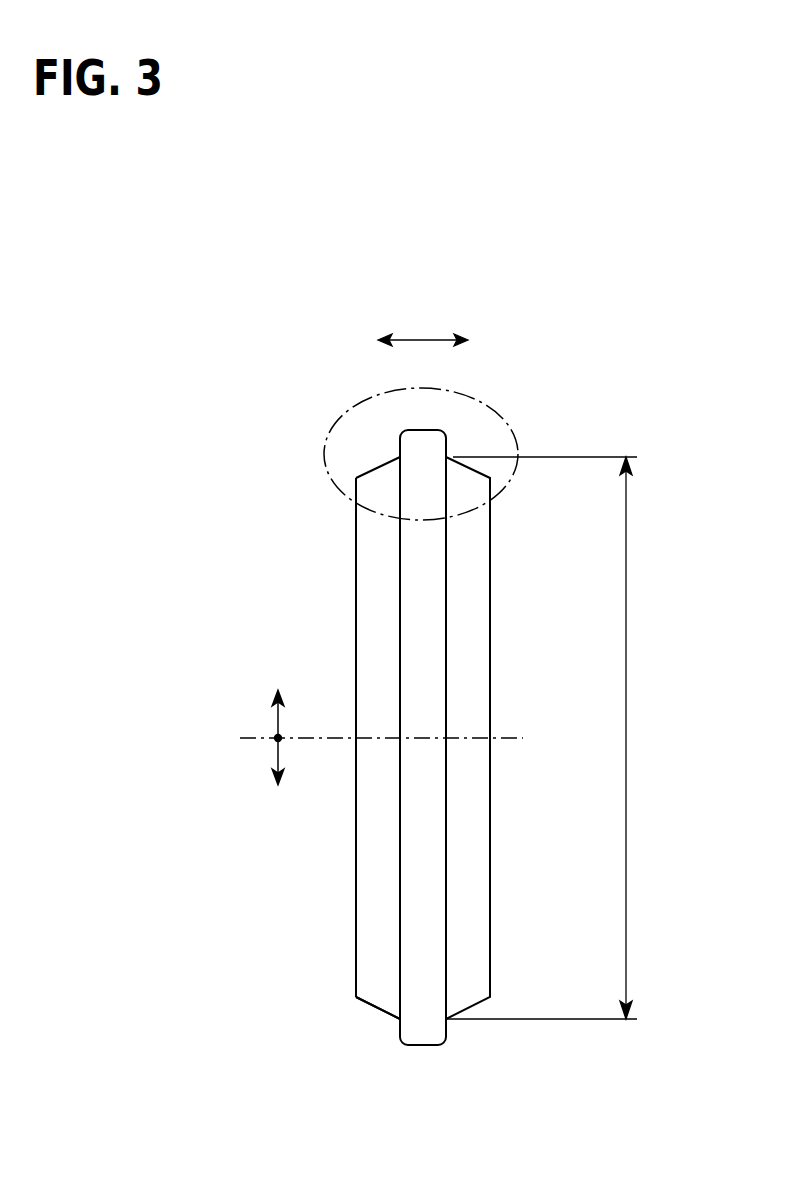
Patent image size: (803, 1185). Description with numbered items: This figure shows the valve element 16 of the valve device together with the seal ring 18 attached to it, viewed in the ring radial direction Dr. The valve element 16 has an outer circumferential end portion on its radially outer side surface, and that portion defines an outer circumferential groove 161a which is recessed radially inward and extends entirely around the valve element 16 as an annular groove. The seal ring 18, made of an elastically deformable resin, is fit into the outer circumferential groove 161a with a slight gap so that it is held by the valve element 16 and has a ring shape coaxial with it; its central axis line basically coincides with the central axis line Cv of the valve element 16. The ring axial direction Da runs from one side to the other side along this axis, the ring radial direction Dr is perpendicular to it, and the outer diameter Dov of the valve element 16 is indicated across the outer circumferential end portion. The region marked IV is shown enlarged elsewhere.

The valve element 16 is at (356, 920).
The outer circumferential groove 161a is at (394, 1005).
The seal ring 18 is at (421, 1033).
The ring axial direction Da is at (427, 336).
The ring radial direction Dr is at (273, 762).
The outer diameter of the valve element Dov is at (627, 693).
The central axis line of the valve element Cv is at (251, 735).
The detail region IV is at (515, 433).